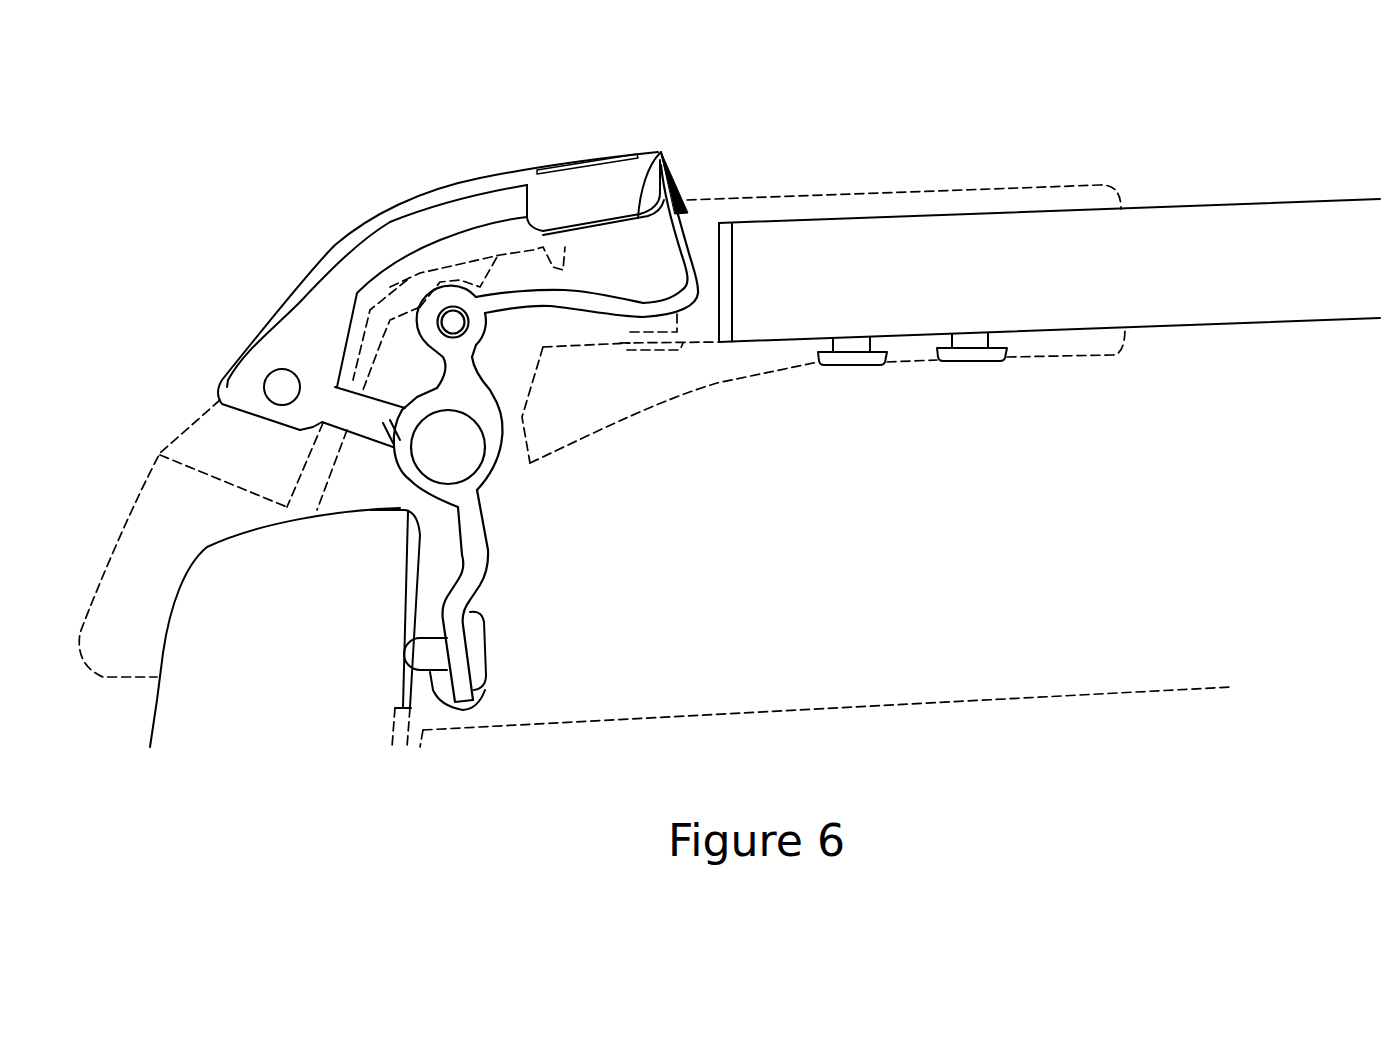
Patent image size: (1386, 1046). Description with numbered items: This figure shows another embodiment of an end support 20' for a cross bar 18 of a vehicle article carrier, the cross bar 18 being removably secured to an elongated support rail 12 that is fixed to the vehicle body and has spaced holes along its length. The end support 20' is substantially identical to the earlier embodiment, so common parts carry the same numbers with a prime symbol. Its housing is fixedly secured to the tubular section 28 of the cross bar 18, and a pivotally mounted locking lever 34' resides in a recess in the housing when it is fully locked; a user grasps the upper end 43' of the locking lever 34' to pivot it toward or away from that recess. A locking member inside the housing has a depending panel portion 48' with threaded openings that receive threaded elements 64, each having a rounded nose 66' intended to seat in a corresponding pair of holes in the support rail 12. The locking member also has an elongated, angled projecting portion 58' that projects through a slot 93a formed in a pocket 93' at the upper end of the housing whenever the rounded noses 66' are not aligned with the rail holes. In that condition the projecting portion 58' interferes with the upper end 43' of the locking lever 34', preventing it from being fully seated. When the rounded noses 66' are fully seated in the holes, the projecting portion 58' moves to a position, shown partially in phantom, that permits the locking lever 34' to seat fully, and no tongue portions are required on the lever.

The support rail 12 is at (190, 713).
The cross bar 18 is at (1088, 130).
The end support 20' is at (482, 403).
The tubular section 28 is at (1234, 216).
The locking lever 34' is at (452, 307).
The upper end 43' is at (608, 162).
The depending panel portion 48' is at (504, 494).
The elongated, angled projecting portion 58' is at (674, 386).
The threaded element 64 is at (477, 641).
The rounded nose 66' is at (485, 694).
The pocket 93' is at (607, 222).
The slot 93a is at (686, 212).